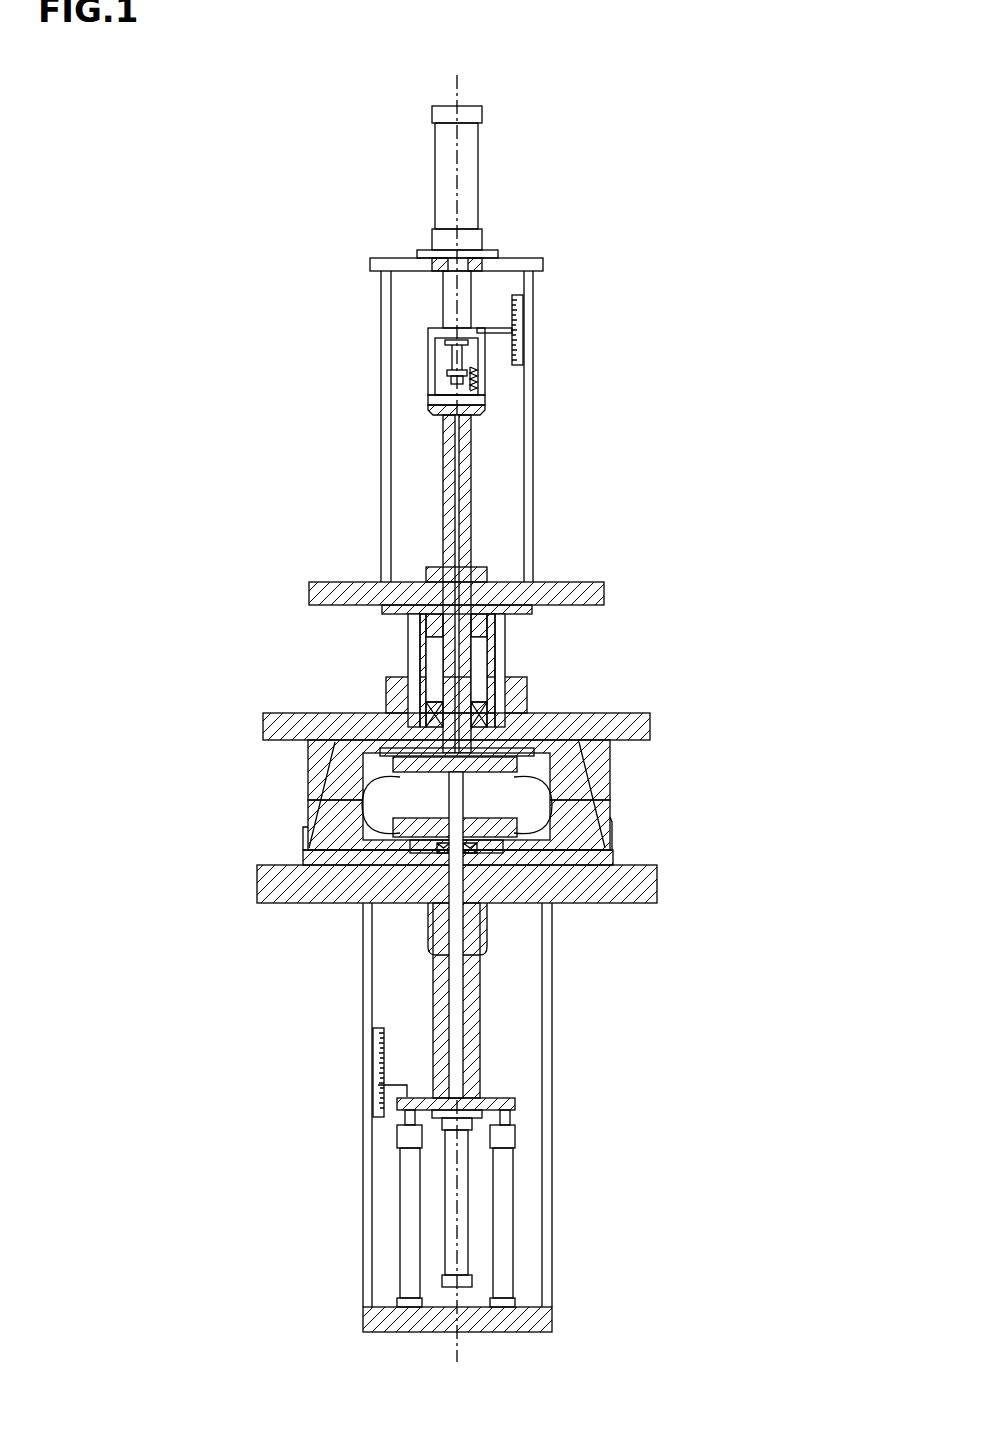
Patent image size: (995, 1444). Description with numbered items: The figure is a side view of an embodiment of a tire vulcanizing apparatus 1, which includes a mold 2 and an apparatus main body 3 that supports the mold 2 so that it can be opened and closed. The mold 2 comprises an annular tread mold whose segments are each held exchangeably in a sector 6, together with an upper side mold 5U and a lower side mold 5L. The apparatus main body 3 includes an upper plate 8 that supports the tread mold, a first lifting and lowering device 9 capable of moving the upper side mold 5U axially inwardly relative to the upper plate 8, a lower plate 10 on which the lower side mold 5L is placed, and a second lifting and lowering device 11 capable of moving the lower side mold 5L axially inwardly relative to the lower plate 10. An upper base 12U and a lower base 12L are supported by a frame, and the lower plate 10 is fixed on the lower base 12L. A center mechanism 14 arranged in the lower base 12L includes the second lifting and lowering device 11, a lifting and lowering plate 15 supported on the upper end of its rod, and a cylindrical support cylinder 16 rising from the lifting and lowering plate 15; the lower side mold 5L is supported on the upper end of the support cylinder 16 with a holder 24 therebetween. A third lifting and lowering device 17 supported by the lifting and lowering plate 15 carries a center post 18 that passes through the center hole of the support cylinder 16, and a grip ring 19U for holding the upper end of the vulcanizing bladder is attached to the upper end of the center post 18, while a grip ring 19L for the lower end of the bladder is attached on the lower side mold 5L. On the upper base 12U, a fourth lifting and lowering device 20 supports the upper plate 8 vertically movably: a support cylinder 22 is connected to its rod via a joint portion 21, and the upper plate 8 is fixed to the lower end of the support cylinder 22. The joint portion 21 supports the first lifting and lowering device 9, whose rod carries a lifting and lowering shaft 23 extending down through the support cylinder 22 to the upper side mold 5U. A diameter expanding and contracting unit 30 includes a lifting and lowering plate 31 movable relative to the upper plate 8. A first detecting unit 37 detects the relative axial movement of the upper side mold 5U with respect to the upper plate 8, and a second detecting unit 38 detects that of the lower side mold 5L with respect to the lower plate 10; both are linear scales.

The tire vulcanizing apparatus 1 is at (650, 487).
The mold 2 is at (567, 752).
The apparatus main body 3 is at (627, 656).
The upper side mold 5U is at (385, 750).
The lower side mold 5L is at (397, 843).
The sector 6 is at (333, 820).
The upper plate 8 is at (350, 745).
The first lifting and lowering device 9 is at (450, 358).
The lower plate 10 is at (322, 863).
The second lifting and lowering device 11 is at (400, 1228).
The upper base 12U is at (605, 593).
The lower base 12L is at (657, 888).
The center mechanism 14 is at (511, 1002).
The lifting and lowering plate 15 is at (505, 1097).
The support cylinder 16 is at (470, 1068).
The third lifting and lowering device 17 is at (468, 1205).
The center post 18 is at (452, 1000).
The grip ring 19U is at (507, 785).
The grip ring 19L is at (507, 812).
The fourth lifting and lowering device 20 is at (478, 178).
The joint portion 21 is at (505, 387).
The support cylinder 22 is at (472, 468).
The lifting and lowering shaft 23 is at (462, 522).
The holder 24 is at (497, 878).
The diameter expanding and contracting unit 30 is at (223, 680).
The lifting and lowering plate 31 is at (263, 727).
The first detecting unit 37 is at (455, 394).
The second detecting unit 38 is at (375, 1138).